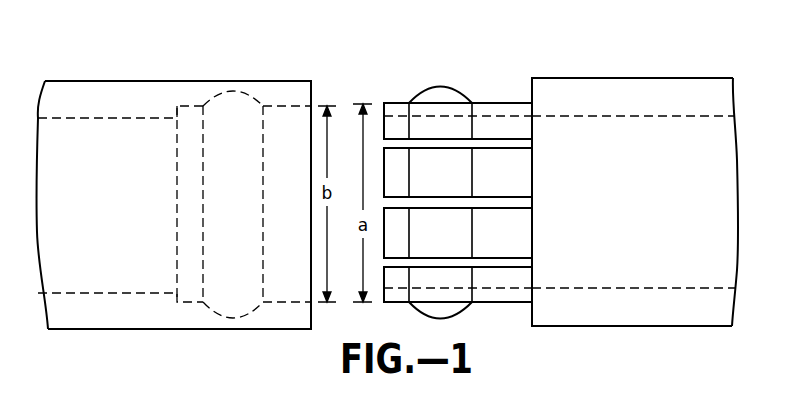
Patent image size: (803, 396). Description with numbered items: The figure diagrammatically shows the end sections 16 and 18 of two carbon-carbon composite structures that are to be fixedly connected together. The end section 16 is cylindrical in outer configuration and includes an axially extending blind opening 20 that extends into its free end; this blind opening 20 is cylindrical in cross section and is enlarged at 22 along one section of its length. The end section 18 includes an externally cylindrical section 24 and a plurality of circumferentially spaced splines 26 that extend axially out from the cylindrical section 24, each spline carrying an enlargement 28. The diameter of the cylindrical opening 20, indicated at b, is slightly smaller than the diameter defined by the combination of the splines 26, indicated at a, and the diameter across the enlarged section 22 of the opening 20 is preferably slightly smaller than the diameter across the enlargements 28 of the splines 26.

The end section 16 is at (136, 81).
The end section 18 is at (596, 78).
The blind opening 20 is at (289, 106).
The enlarged section 22 is at (239, 318).
The externally cylindrical section 24 is at (656, 78).
The splines 26 is at (489, 103).
The enlargement 28 is at (437, 87).